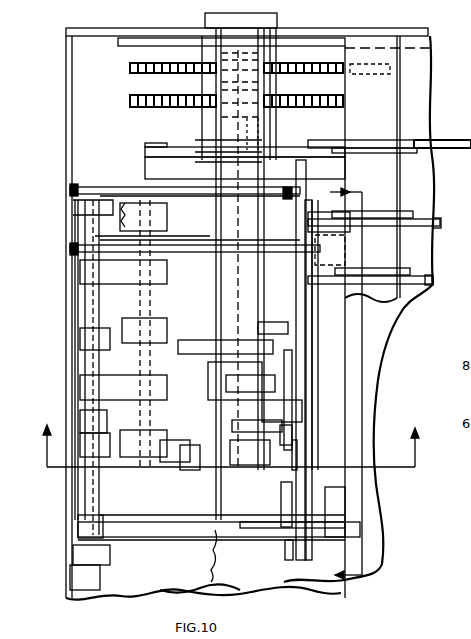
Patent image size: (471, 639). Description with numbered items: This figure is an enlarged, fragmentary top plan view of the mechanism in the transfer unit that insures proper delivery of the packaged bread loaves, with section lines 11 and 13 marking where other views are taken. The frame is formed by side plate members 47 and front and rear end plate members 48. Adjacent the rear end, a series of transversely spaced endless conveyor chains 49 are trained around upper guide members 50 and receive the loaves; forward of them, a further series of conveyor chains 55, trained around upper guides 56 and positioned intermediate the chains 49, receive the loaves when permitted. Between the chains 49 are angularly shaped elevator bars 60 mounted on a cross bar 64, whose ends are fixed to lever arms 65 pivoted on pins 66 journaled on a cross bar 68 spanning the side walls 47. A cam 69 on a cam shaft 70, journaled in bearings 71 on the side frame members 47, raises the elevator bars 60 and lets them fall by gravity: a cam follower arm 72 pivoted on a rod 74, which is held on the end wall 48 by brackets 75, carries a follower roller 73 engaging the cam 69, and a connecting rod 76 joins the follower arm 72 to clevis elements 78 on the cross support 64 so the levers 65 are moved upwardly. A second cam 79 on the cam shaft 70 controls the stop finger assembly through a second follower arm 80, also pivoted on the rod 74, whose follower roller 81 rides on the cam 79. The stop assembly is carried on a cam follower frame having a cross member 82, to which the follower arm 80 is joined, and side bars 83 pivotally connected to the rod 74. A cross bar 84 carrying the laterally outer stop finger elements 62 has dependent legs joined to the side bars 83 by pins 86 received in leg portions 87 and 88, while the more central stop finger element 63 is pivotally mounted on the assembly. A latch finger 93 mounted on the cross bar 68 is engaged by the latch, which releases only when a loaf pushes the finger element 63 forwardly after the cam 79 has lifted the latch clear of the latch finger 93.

The section line 11- 11 is at (232, 436).
The section line 13- 13 is at (335, 386).
The side plate member 47 is at (318, 33).
The end plate member 48 is at (70, 106).
The endless conveyor chain 49 is at (289, 188).
The upper guide member 50 is at (96, 186).
The endless conveyor chain 55 is at (312, 142).
The upper guide 56 is at (366, 142).
The elevator bar 60 is at (130, 284).
The stop finger element 62 is at (316, 470).
The stop finger element 63 is at (290, 441).
The cross bar 64 is at (154, 477).
The lever arm 65 is at (177, 150).
The pin 66 is at (262, 131).
The cross bar 68 is at (245, 168).
The cam 69 is at (186, 401).
The cam shaft 70 is at (210, 554).
The bearing 71 is at (278, 53).
The cam follower arm 72 is at (110, 430).
The follower roller 73 is at (246, 446).
The rod 74 is at (98, 498).
The bracket 75 is at (106, 560).
The connecting rod 76 is at (177, 475).
The clevis element 78 is at (192, 466).
The second cam 79 is at (188, 354).
The second follower arm 80 is at (180, 334).
The follower roller 81 is at (242, 352).
The cross member 82 is at (333, 515).
The side bar 83 is at (154, 533).
The cross bar 84 is at (293, 466).
The pin 86 is at (290, 560).
The portion 87 is at (240, 590).
The portion 88 is at (291, 505).
The latch finger 93 is at (282, 380).